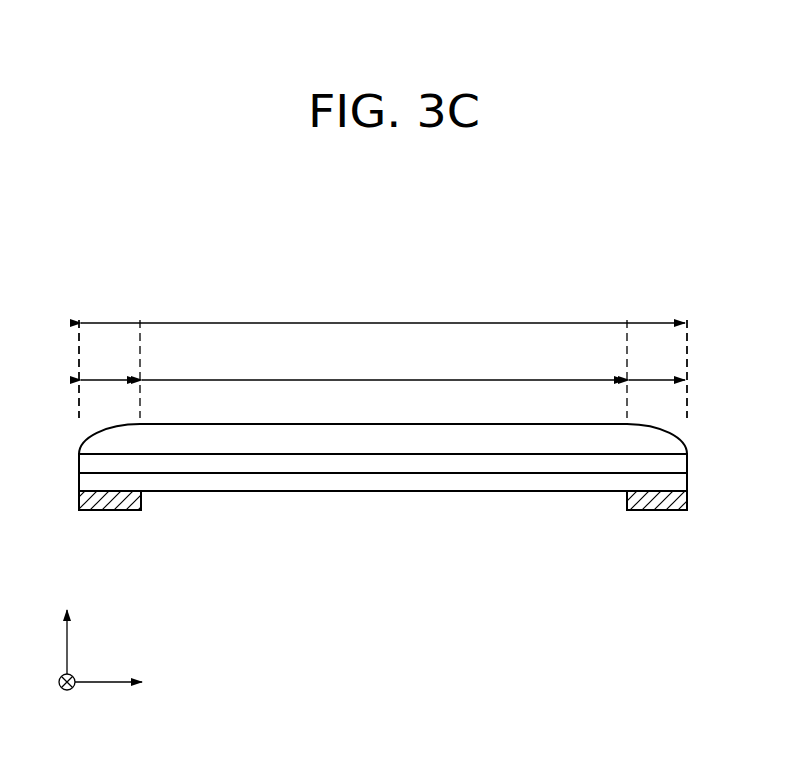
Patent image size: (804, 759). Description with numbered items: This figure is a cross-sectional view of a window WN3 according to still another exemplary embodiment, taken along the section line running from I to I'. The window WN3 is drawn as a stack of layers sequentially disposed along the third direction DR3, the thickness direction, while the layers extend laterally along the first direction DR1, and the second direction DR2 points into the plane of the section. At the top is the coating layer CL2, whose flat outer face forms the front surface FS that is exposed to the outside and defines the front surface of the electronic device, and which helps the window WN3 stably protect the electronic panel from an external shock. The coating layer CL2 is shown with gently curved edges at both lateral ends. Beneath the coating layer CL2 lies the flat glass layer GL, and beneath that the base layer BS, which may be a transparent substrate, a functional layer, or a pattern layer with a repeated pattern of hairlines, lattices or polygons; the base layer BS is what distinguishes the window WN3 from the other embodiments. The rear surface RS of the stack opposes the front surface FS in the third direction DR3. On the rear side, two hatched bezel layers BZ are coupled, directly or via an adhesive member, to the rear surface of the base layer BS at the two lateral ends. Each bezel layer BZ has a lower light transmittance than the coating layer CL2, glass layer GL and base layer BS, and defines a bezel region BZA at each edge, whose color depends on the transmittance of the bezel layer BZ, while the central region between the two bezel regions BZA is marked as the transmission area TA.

The window WN3 is at (681, 276).
The front surface FS is at (383, 308).
The transmission area TA is at (383, 365).
The bezel region BZA is at (383, 365).
The coating layer CL2 is at (652, 437).
The glass layer GL is at (675, 461).
The base layer BS is at (675, 483).
The bezel layer BZ is at (677, 497).
The rear surface RS is at (568, 491).
The section line I is at (77, 431).
The section line I' is at (688, 431).
The first direction DR1 is at (130, 683).
The second direction DR2 is at (67, 696).
The third direction DR3 is at (67, 627).